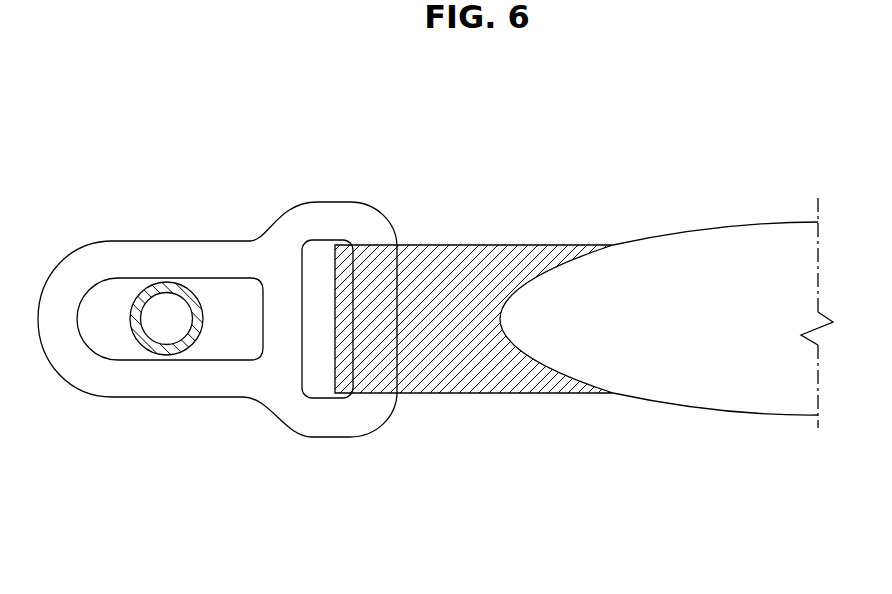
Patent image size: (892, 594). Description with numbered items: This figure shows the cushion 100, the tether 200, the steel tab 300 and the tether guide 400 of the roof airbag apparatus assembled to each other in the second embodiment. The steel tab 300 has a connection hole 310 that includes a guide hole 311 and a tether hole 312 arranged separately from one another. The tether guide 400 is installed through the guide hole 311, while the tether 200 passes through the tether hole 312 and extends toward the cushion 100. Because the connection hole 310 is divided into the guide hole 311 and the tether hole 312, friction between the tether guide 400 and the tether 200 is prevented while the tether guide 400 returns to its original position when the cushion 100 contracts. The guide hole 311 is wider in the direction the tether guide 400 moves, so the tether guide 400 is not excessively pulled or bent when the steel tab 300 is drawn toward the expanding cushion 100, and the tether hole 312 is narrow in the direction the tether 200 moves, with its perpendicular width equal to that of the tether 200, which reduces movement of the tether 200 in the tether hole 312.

The cushion 100 is at (657, 263).
The tether 200 is at (432, 277).
The steel tab 300 is at (192, 228).
The connection hole 310 is at (215, 392).
The guide hole 311 is at (195, 353).
The tether hole 312 is at (315, 387).
The tether guide 400 is at (153, 287).